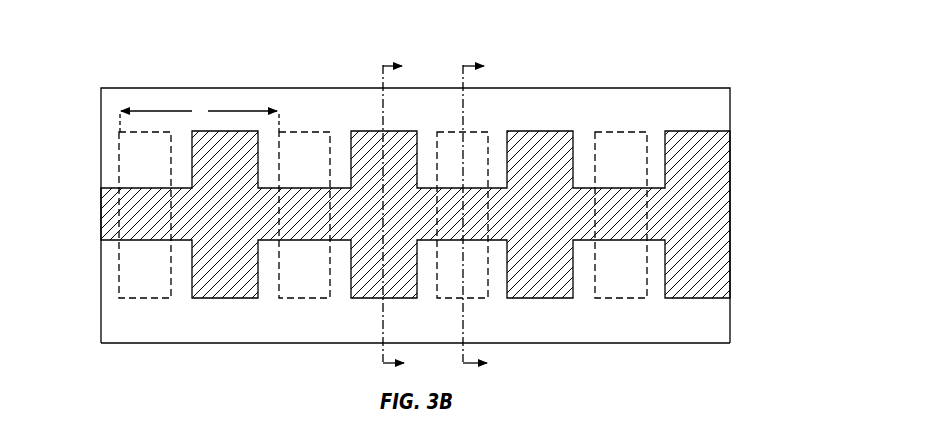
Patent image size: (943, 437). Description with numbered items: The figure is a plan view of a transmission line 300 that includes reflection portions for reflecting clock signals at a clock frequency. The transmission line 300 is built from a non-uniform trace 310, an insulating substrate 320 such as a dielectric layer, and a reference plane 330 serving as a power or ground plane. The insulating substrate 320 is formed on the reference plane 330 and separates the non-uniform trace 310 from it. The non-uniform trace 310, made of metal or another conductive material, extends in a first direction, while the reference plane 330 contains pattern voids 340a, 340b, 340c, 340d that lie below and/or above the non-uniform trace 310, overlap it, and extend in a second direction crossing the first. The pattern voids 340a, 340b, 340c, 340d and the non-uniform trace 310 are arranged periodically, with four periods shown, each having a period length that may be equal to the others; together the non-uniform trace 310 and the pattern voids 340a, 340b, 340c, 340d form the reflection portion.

The transmission line 300 is at (723, 44).
The non-uniform trace 310 is at (101, 213).
The insulating substrate 320 is at (726, 312).
The reference plane 330 is at (731, 327).
The pattern void 340a is at (148, 299).
The pattern void 340b is at (305, 299).
The pattern void 340c is at (472, 299).
The pattern void 340d is at (623, 299).